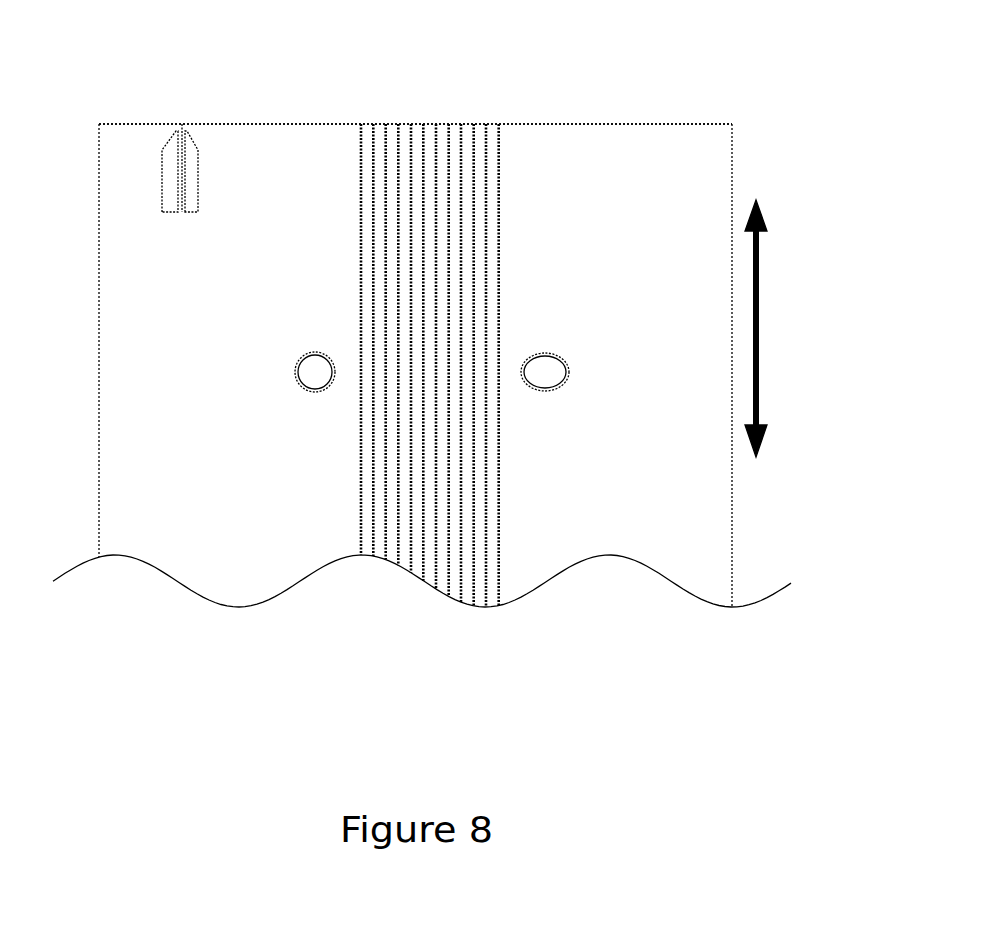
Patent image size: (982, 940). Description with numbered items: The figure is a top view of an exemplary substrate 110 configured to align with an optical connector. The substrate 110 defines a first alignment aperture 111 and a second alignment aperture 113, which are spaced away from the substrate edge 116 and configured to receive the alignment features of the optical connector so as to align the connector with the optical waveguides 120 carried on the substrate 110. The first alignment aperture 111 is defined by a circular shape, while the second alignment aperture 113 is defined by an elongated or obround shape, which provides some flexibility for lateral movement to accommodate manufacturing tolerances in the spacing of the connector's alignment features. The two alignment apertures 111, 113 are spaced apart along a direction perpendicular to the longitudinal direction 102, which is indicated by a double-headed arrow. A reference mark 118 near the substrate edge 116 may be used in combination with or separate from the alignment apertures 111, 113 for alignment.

The substrate 110 is at (665, 47).
The substrate edge 116 is at (558, 122).
The reference mark 118 is at (182, 124).
The optical waveguides 120 is at (385, 213).
The first alignment aperture 111 is at (311, 372).
The second alignment aperture 113 is at (544, 372).
The longitudinal direction 102 is at (758, 341).